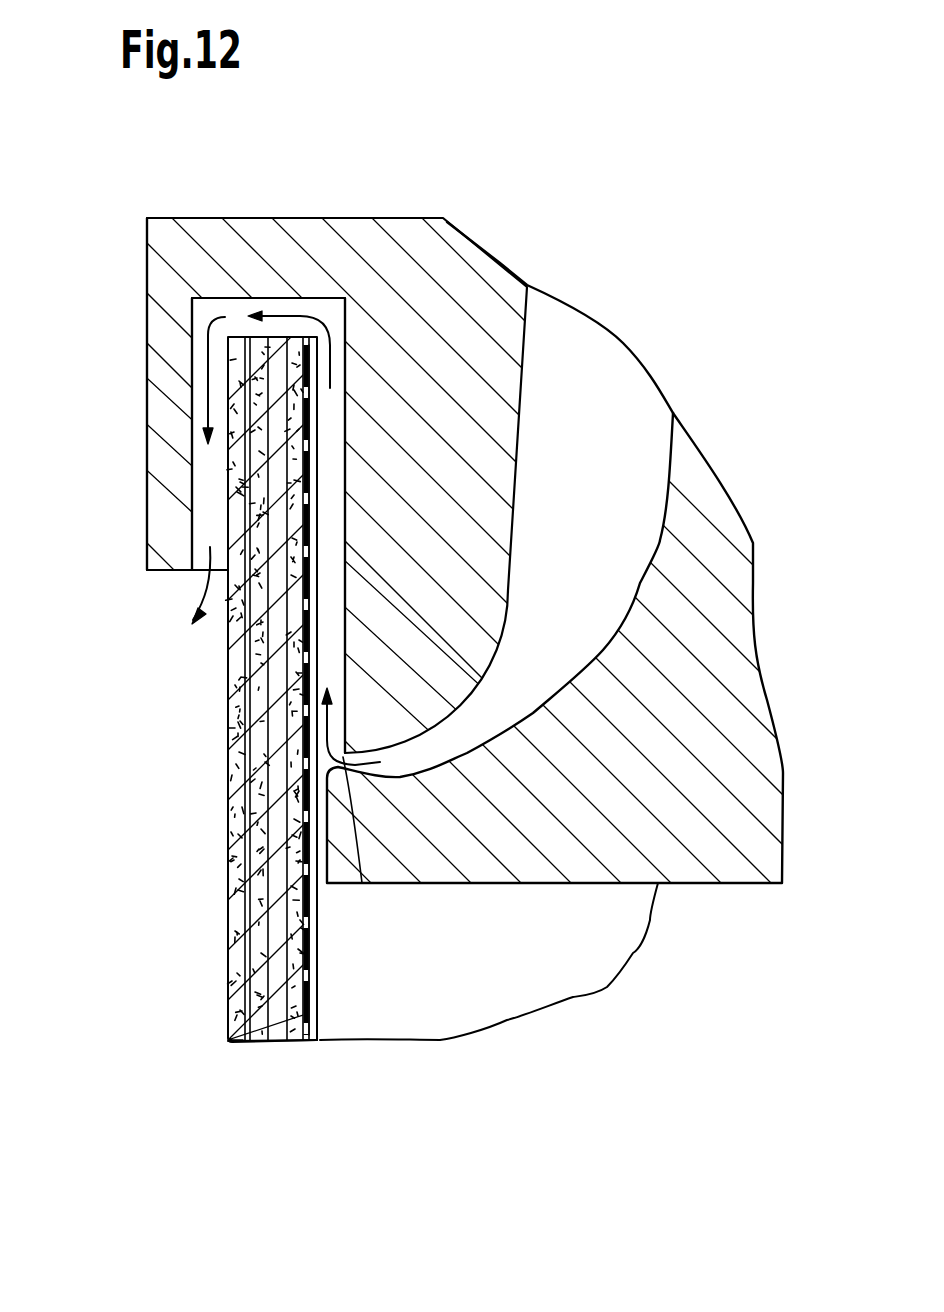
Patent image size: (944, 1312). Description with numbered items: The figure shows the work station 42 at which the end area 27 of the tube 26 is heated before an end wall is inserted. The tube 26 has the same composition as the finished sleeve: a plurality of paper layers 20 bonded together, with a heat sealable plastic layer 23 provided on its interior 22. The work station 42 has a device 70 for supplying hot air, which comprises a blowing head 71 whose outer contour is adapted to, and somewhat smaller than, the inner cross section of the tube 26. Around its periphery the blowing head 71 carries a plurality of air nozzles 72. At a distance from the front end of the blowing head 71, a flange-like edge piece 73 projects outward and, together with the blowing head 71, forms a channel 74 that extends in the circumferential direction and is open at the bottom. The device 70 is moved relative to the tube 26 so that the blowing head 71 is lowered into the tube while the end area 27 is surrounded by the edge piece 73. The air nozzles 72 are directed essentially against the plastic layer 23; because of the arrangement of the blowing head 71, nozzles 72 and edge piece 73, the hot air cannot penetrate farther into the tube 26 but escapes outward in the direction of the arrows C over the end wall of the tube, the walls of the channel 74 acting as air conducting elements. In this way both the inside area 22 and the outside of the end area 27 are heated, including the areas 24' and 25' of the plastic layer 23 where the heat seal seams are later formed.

The paper layers 20 is at (230, 772).
The interior 22 is at (327, 492).
The heat sealable plastic layer 23 is at (317, 1037).
The area of the plastic layer 24' is at (461, 690).
The area of the plastic layer 25' is at (449, 690).
The tube 26 is at (567, 980).
The end area 27 is at (185, 665).
The work station 42 is at (657, 323).
The device for supplying hot air 70 is at (505, 262).
The blowing head 71 is at (730, 553).
The air nozzles 72 is at (362, 883).
The flange-like edge piece 73 is at (162, 335).
The channel 74 is at (338, 300).
The arrows C is at (297, 312).